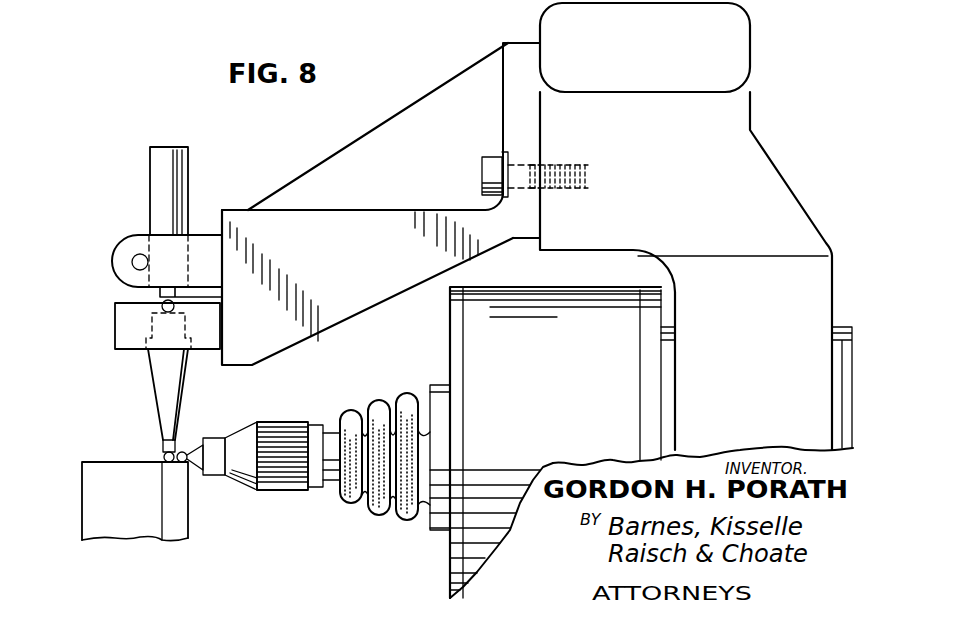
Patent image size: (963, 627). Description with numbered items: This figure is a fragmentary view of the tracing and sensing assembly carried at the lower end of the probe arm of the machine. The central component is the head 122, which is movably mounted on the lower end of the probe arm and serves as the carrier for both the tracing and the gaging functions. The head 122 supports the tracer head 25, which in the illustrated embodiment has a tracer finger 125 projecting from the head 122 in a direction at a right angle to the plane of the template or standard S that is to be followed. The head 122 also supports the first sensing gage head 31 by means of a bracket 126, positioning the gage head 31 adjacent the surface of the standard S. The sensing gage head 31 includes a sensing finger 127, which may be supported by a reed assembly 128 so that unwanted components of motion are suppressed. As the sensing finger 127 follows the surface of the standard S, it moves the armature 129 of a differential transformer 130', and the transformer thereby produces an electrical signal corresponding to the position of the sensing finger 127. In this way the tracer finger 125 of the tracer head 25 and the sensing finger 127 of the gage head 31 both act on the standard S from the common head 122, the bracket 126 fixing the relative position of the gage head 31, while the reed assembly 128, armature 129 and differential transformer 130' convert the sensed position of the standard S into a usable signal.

The head 122 is at (750, 104).
The bracket 126 is at (307, 183).
The differential transformer 130' is at (142, 191).
The armature 129 is at (160, 292).
The reed assembly 128 is at (125, 318).
The first sensing gage head 31 is at (143, 385).
The sensing finger 127 is at (165, 455).
The tracer finger 125 is at (190, 452).
The tracer head 25 is at (447, 377).
The standard S is at (92, 497).